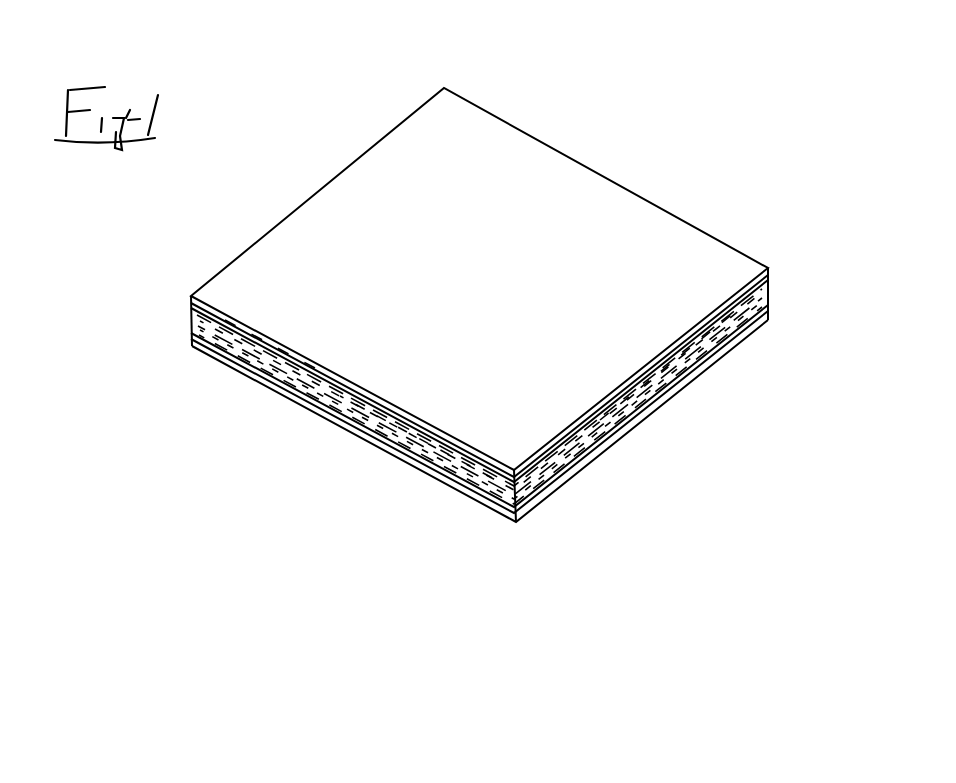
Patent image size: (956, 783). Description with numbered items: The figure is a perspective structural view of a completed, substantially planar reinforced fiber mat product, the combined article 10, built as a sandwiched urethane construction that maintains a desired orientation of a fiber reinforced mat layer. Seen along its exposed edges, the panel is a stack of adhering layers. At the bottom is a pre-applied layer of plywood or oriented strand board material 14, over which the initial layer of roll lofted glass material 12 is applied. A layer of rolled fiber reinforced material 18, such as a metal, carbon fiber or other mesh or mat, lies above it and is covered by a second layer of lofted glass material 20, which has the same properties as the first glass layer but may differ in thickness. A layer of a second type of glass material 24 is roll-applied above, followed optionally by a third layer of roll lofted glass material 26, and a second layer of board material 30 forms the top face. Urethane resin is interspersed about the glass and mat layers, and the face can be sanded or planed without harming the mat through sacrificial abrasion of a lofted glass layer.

The combined article and process 10 is at (340, 101).
The second layer of board material 30 is at (211, 280).
The third layer of roll lofted glass material 26 is at (190, 304).
The layer of second type of glass material 24 is at (190, 313).
The second layer of lofted glass material 20 is at (190, 330).
The layer of rolled fiber reinforced material 18 is at (190, 326).
The initial layer of roll lofted glass material 12 is at (190, 336).
The layer of plywood or OSB material 14 is at (221, 363).